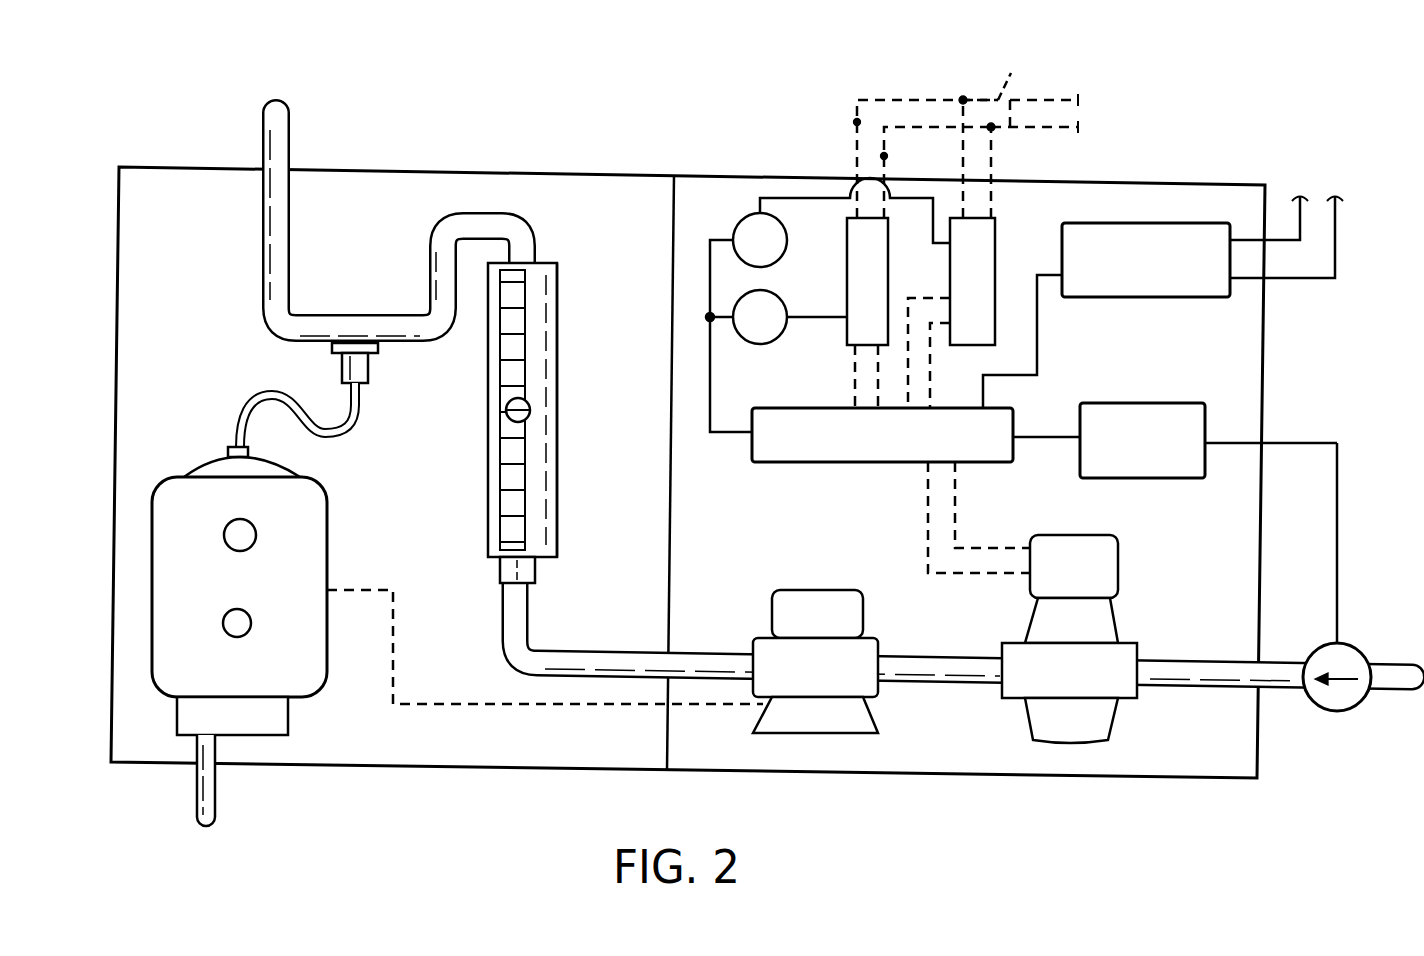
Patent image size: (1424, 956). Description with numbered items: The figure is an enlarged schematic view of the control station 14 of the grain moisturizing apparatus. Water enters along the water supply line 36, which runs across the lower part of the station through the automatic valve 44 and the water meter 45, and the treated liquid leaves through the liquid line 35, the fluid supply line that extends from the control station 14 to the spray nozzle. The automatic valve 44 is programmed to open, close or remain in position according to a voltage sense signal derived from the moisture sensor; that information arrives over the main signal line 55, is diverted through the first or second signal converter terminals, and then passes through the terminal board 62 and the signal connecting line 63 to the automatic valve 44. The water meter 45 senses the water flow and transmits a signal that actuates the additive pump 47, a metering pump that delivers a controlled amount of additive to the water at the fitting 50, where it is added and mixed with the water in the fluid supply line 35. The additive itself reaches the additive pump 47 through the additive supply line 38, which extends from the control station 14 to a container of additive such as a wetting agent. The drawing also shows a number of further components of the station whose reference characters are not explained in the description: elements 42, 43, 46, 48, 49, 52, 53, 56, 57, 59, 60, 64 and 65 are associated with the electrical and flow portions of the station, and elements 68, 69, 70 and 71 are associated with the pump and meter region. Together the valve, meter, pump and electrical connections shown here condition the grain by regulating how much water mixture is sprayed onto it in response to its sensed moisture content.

The control station 14 is at (591, 117).
The liquid line 35 is at (292, 142).
The water supply line 36 is at (587, 655).
The additive supply line 38 is at (214, 807).
The motor starter 42 is at (1172, 403).
The pump 43 is at (1340, 712).
The automatic valve 44 is at (1112, 613).
The water meter 45 is at (873, 712).
The control line 46 is at (428, 705).
The additive pump 47 is at (162, 650).
The flow meter 48 is at (488, 486).
The tube 49 is at (258, 394).
The fitting 50 is at (370, 370).
The power supply 52 is at (1177, 298).
The power leads 53 is at (1302, 232).
The main signal line 55 is at (1034, 91).
The sensor lead 56 is at (870, 147).
The sensor lead 57 is at (963, 160).
The relay 59 is at (847, 257).
The relay 60 is at (995, 272).
The terminal board 62 is at (800, 463).
The signal connecting line 63 is at (926, 532).
The indicator lamp 64 is at (778, 340).
The indicator lamp 65 is at (742, 222).
The tank port 68 is at (224, 531).
The tank port 69 is at (223, 620).
The meter housing 70 is at (559, 303).
The float indicator 71 is at (532, 409).